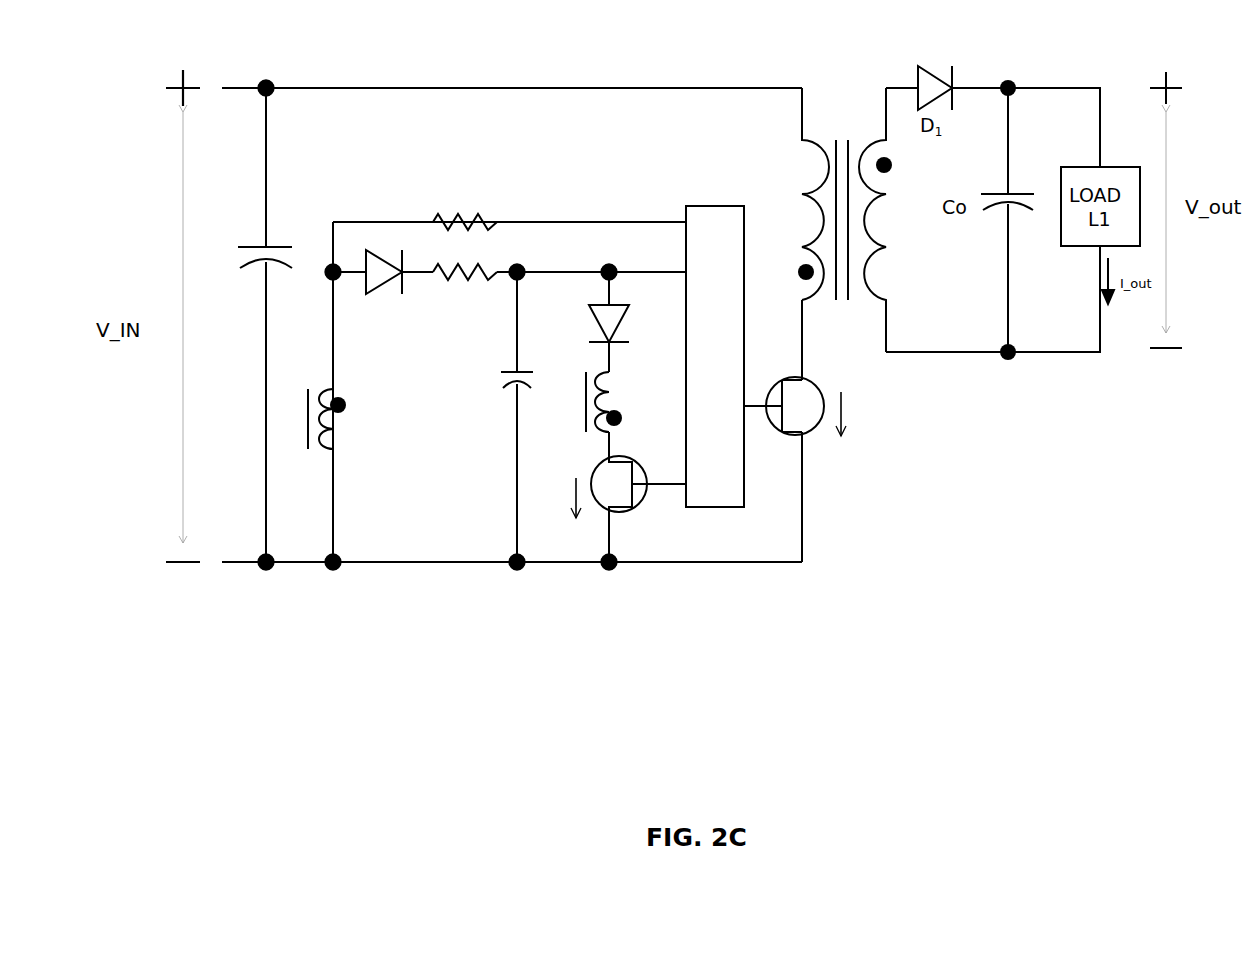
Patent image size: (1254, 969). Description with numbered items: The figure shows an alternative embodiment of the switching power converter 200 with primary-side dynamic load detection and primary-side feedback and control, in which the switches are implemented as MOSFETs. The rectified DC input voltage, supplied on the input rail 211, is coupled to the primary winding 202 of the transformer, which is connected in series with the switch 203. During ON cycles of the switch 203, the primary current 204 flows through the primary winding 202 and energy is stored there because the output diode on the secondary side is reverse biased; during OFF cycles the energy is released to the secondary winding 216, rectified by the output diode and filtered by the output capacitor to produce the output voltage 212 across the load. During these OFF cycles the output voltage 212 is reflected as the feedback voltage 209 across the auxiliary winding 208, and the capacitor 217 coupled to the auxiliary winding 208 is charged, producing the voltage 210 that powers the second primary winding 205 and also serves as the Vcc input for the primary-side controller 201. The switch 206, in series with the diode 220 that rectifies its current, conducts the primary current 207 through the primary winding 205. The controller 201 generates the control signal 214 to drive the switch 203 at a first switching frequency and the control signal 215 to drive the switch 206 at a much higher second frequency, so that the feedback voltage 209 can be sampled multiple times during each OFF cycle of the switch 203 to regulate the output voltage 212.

The switching power converter 200 is at (695, 630).
The primary-side controller 201 is at (706, 204).
The primary winding 202 is at (788, 194).
The switch 203 is at (784, 431).
The primary current Isw1 204 is at (853, 434).
The primary winding 205 is at (556, 382).
The switch 206 is at (641, 506).
The primary current Isw2 207 is at (570, 505).
The auxiliary winding 208 is at (356, 418).
The feedback voltage 209 is at (614, 219).
The voltage 210 is at (655, 268).
The input voltage rail 211 is at (557, 80).
The output voltage 212 is at (1027, 80).
The control signal SW1 214 is at (757, 403).
The control signal SW2 215 is at (658, 470).
The secondary winding 216 is at (895, 292).
The capacitor 217 is at (478, 387).
The diode 220 is at (645, 334).